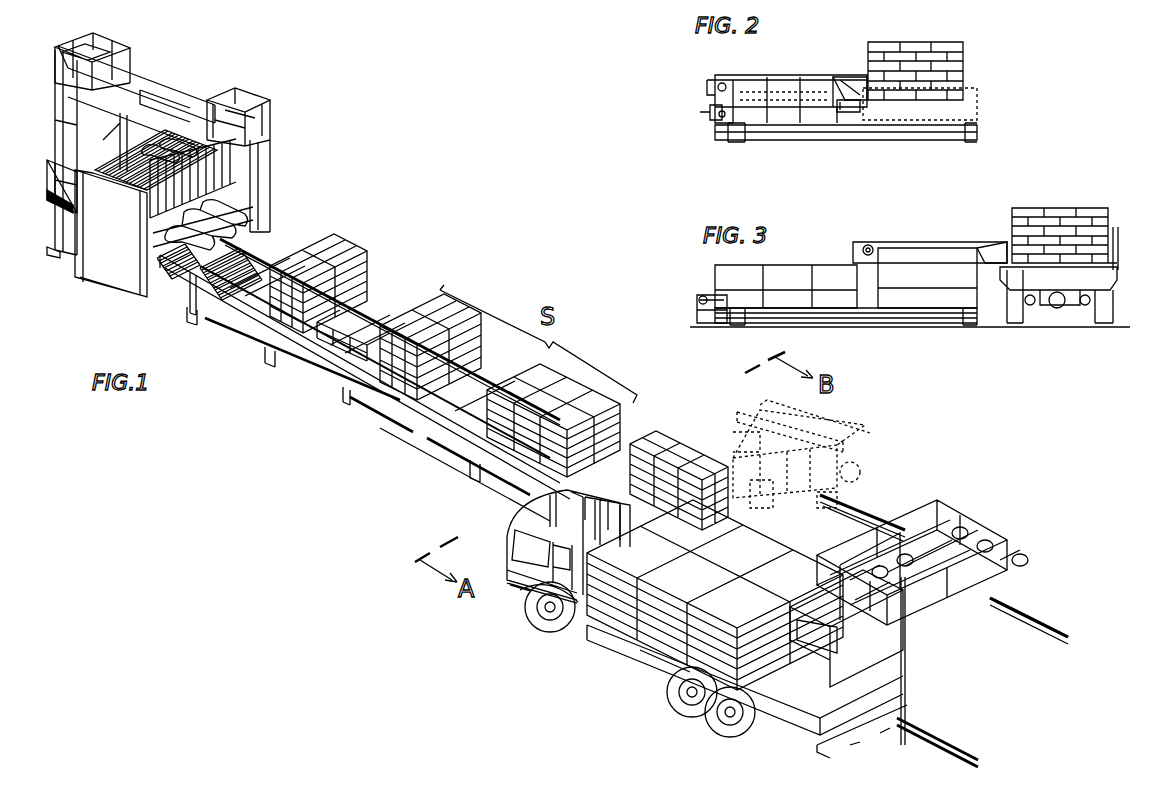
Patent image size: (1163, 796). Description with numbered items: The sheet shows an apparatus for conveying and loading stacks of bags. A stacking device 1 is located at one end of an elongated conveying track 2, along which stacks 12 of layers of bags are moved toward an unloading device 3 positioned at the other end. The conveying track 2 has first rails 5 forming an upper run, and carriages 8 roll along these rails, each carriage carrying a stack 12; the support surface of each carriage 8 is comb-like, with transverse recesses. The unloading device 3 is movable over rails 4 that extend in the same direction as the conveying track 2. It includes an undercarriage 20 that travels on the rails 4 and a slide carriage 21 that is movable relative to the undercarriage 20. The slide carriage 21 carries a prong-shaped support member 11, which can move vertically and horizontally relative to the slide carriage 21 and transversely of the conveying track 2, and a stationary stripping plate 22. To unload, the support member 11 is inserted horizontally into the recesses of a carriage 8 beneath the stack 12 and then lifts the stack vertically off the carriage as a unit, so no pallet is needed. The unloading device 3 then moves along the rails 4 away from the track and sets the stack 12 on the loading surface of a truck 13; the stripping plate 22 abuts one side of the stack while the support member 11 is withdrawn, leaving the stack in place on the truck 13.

In FIG. 1, the stacking device 1 is at (295, 77).
In FIG. 1, the conveying track 2 is at (386, 408).
In FIG. 1, the unloading device 3 is at (994, 506).
In FIG. 1, the rails 4 is at (1037, 627).
In FIG. 2, the rails 4 is at (736, 142).
In FIG. 3, the rails 4 is at (733, 325).
In FIG. 1, the first rails 5 is at (383, 325).
In FIG. 1, the carriages 8 is at (334, 355).
In FIG. 2, the prong-shaped support member 11 is at (843, 100).
In FIG. 3, the prong-shaped support member 11 is at (1023, 265).
In FIG. 1, the stack of bags 12 is at (304, 252).
In FIG. 2, the stack of bags 12 is at (963, 58).
In FIG. 3, the stack of bags 12 is at (1050, 210).
In FIG. 1, the truck 13 is at (785, 683).
In FIG. 1, the undercarriage 20 is at (960, 600).
In FIG. 2, the undercarriage 20 is at (905, 128).
In FIG. 3, the undercarriage 20 is at (873, 310).
In FIG. 1, the slide carriage 21 is at (857, 647).
In FIG. 2, the slide carriage 21 is at (795, 115).
In FIG. 3, the slide carriage 21 is at (927, 297).
In FIG. 2, the stripping plate 22 is at (865, 78).
In FIG. 3, the stripping plate 22 is at (1005, 242).